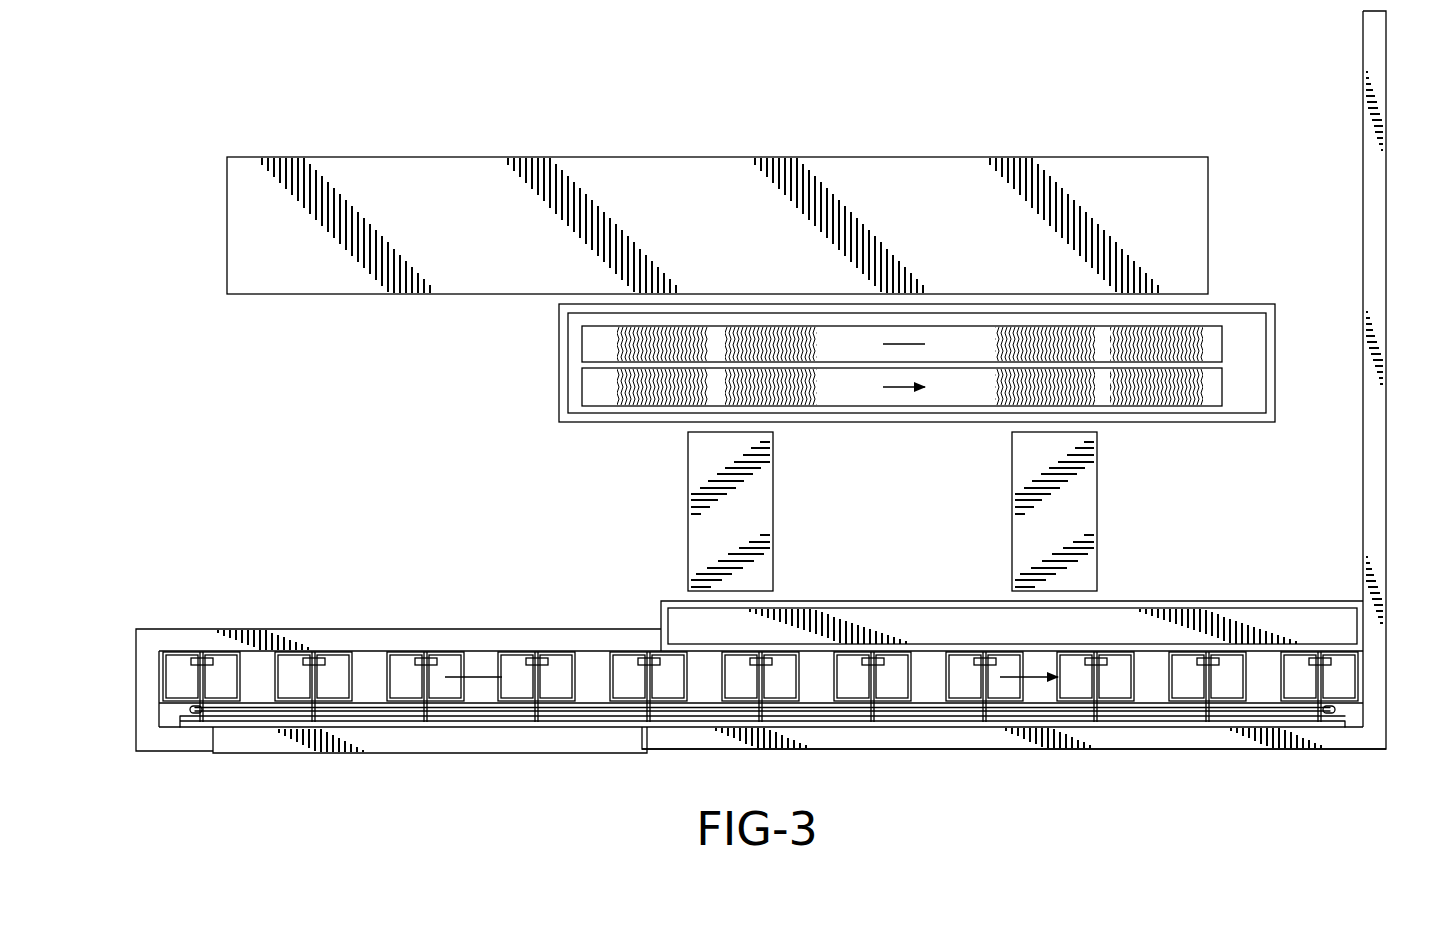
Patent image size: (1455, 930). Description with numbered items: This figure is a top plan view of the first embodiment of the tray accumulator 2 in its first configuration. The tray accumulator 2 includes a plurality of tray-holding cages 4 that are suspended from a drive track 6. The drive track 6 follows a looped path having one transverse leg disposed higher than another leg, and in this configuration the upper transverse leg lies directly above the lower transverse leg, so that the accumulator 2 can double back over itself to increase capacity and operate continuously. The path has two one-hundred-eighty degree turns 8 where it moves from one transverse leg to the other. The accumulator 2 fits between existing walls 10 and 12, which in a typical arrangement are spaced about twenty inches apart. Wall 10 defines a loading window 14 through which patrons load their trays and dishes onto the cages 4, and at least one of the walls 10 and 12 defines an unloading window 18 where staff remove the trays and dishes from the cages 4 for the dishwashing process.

The tray accumulator 2 is at (1190, 737).
The tray-holding cages 4 is at (230, 652).
The drive track 6 is at (941, 722).
The 180 degree turns 8 is at (161, 710).
The wall 10 is at (902, 740).
The wall 12 is at (612, 638).
The loading window 14 is at (397, 740).
The unloading window 18 is at (950, 635).